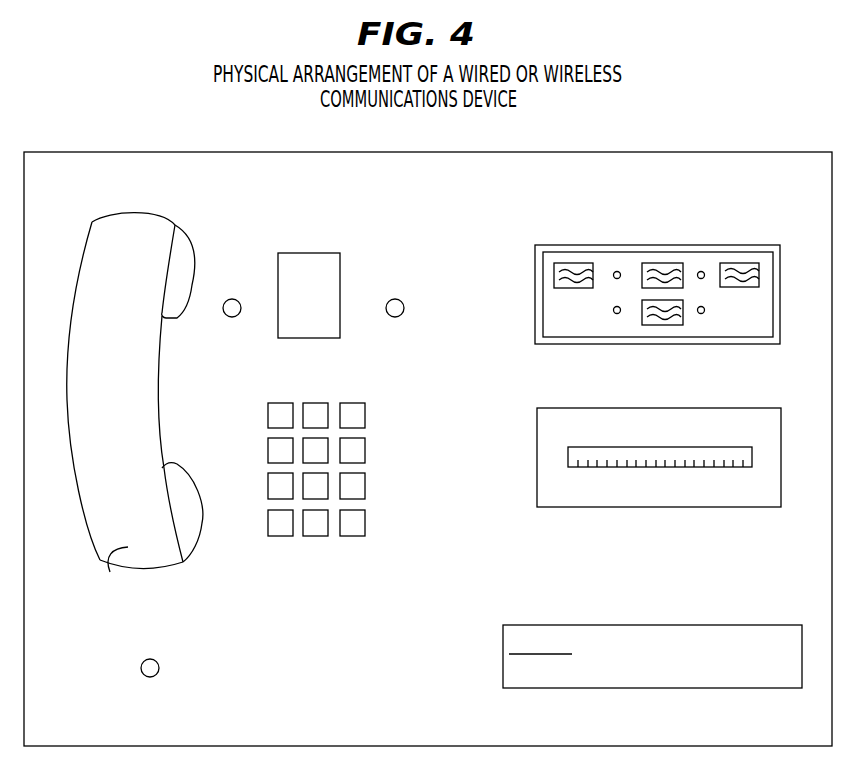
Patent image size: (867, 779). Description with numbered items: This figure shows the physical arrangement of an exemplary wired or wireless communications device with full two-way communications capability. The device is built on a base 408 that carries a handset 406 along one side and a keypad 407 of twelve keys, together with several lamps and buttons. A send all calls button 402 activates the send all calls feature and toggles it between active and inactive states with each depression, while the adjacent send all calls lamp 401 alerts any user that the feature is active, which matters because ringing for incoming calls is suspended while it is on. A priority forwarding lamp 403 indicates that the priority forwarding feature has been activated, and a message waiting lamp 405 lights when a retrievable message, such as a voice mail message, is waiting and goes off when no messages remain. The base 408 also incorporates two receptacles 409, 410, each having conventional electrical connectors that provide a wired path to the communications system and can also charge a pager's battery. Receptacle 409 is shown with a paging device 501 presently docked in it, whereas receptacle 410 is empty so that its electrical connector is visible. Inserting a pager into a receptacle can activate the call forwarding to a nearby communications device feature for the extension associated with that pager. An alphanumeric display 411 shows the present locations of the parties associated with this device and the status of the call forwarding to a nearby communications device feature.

The send all calls lamp 401 is at (216, 336).
The send all calls button 402 is at (292, 253).
The priority forwarding lamp 403 is at (397, 335).
The message waiting lamp 405 is at (170, 678).
The handset 406 is at (135, 409).
The keypad 407 is at (368, 557).
The base 408 is at (632, 152).
The receptacle 409 is at (674, 297).
The receptacle 410 is at (537, 485).
The alphanumeric display 411 is at (503, 681).
The paging device 501 is at (633, 222).